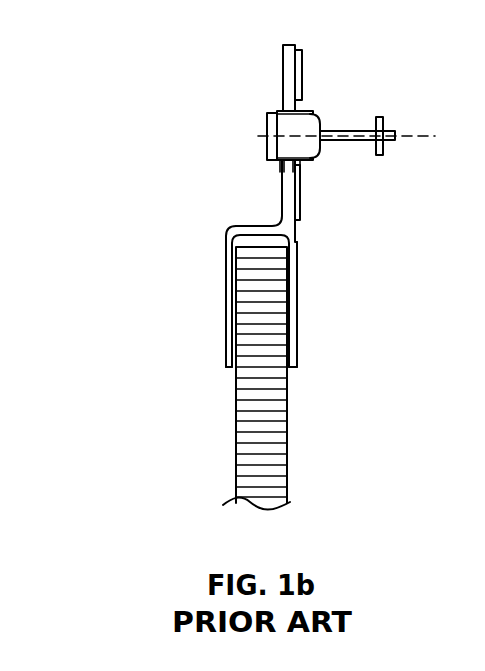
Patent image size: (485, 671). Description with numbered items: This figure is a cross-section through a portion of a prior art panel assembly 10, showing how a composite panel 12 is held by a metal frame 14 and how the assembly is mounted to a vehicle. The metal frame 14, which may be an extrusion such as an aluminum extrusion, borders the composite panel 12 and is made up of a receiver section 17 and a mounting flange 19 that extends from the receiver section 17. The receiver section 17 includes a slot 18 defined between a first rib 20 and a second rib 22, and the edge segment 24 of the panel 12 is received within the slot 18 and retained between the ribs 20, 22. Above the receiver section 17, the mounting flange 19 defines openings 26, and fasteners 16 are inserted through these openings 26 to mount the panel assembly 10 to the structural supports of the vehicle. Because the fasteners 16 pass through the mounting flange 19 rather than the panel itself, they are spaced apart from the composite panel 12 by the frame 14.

The panel assembly 10 is at (113, 158).
The composite panel 12 is at (250, 432).
The metal frame 14 is at (282, 210).
The fasteners 16 is at (342, 137).
The receiver section 17 is at (208, 267).
The slot 18 is at (279, 292).
The mounting flange 19 is at (287, 73).
The first rib 20 is at (228, 338).
The second rib 22 is at (292, 343).
The edge segment 24 is at (250, 305).
The openings 26 is at (281, 107).